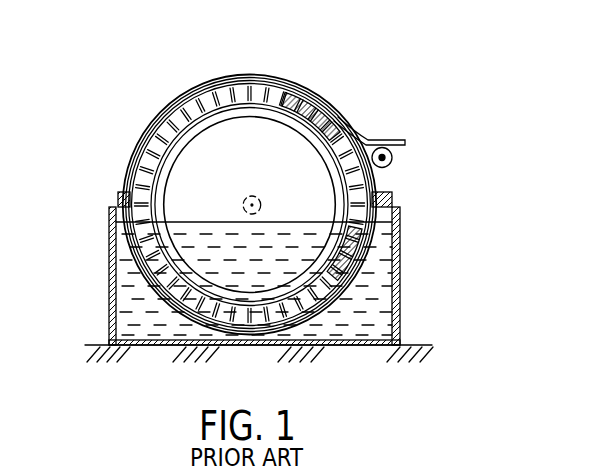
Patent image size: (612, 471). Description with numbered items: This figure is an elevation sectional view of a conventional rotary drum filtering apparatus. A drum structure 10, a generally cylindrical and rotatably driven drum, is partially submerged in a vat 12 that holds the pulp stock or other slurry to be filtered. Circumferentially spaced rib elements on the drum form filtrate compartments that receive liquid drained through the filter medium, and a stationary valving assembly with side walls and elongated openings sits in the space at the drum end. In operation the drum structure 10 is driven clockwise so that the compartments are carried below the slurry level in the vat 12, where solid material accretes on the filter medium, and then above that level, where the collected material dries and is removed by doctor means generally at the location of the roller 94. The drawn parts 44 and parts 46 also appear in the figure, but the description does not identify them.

The rotary drum screen assembly 10 is at (276, 198).
The tank 12 is at (108, 283).
The support ring 44 is at (342, 290).
The spoke 46 is at (262, 312).
The roller 94 is at (394, 161).